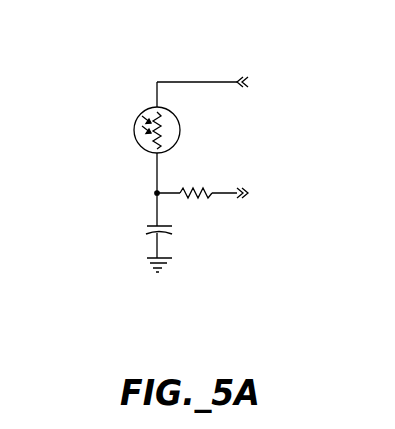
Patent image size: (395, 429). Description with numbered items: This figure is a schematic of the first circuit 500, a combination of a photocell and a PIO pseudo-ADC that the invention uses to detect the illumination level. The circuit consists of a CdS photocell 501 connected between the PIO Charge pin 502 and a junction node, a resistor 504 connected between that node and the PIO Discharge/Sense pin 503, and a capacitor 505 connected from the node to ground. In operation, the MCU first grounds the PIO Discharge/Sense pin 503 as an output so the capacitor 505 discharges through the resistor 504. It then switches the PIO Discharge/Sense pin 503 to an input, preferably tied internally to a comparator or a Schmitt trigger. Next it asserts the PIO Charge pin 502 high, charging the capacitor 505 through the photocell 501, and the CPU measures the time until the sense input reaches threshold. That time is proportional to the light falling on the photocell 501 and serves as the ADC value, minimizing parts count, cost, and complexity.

The first circuit 500 is at (128, 280).
The photocell 501 is at (132, 120).
The PIO Charge pin 502 is at (270, 80).
The PIO Discharge/Sense pin 503 is at (252, 177).
The resistor 504 is at (207, 197).
The capacitor 505 is at (192, 243).